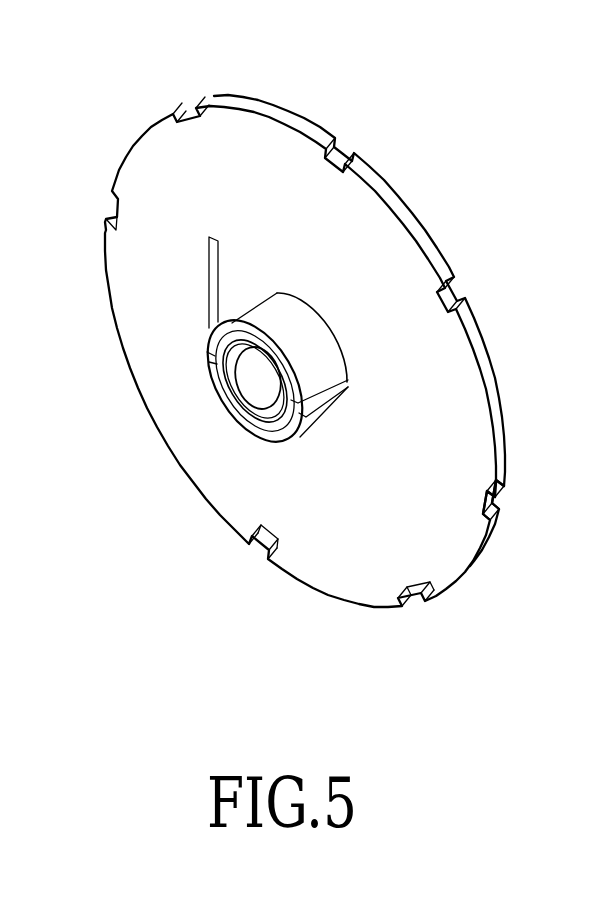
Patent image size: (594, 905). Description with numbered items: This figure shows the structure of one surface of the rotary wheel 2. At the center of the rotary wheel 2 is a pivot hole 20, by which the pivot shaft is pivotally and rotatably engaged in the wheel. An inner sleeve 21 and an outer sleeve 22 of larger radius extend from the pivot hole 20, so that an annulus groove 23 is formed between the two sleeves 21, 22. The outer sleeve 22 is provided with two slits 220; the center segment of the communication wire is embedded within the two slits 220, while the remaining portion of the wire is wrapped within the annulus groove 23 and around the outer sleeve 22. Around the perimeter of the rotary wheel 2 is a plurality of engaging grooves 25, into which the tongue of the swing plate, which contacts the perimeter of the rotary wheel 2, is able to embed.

The rotary wheel 2 is at (278, 143).
The pivot hole 20 is at (213, 383).
The inner sleeve 21 is at (245, 378).
The outer sleeve 22 is at (258, 432).
The annulus groove 23 is at (288, 424).
The slits 220 is at (208, 352).
The engaging grooves 25 is at (498, 502).